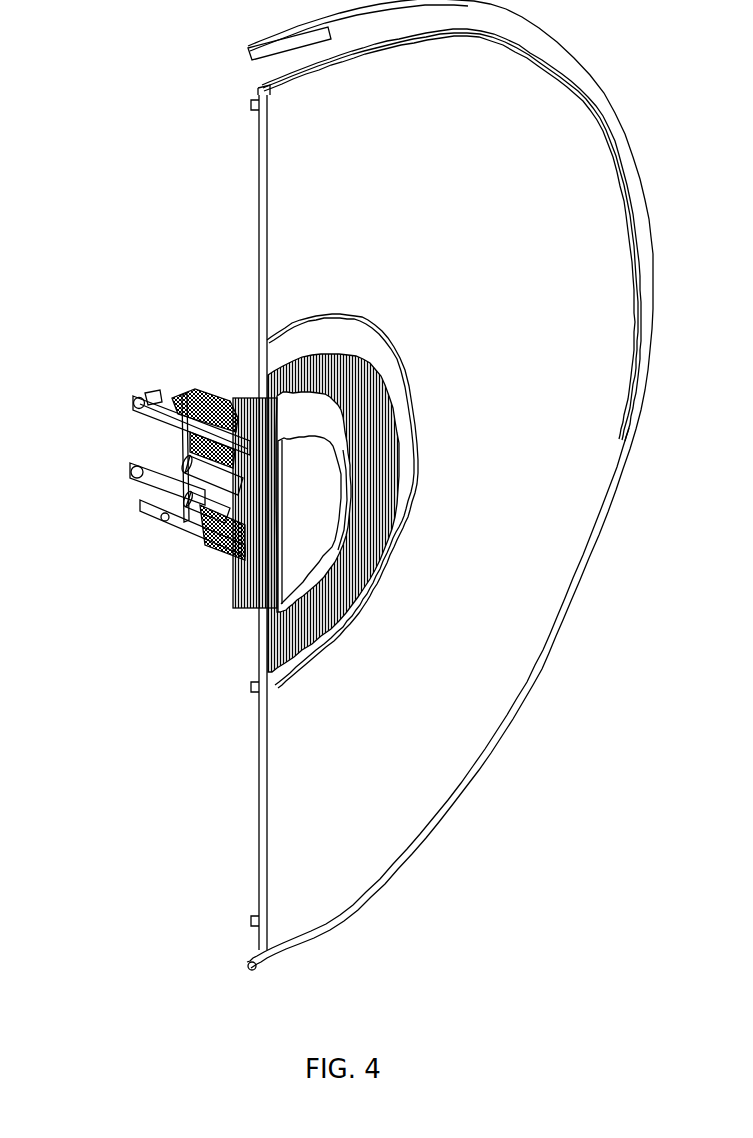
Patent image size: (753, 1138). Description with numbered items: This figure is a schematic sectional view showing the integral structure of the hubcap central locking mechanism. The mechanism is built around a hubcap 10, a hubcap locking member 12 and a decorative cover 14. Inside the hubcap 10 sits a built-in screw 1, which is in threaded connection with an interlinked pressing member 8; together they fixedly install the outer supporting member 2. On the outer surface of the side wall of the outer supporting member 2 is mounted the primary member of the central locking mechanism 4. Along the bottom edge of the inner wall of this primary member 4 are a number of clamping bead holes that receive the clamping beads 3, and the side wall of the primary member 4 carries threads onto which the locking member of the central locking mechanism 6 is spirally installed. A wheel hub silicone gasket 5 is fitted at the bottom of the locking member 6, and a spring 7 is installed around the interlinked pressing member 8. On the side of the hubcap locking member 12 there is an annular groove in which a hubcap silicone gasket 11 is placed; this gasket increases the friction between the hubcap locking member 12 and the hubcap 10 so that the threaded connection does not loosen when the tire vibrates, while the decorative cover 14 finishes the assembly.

The screw 1 is at (148, 463).
The outer supporting member 2 is at (143, 420).
The clamping bead 3 is at (136, 400).
The primary member of central locking module 4 is at (150, 395).
The wheel hub silicone gasket 5 is at (167, 512).
The locking member of central locking mechanism 6 is at (187, 393).
The spring 7 is at (167, 518).
The interlinked pressing member 8 is at (193, 527).
The hubcap 10 is at (337, 316).
The hubcap silicone gasket 11 is at (243, 572).
The hubcap locking member 12 is at (232, 440).
The decorative cover 14 is at (302, 525).